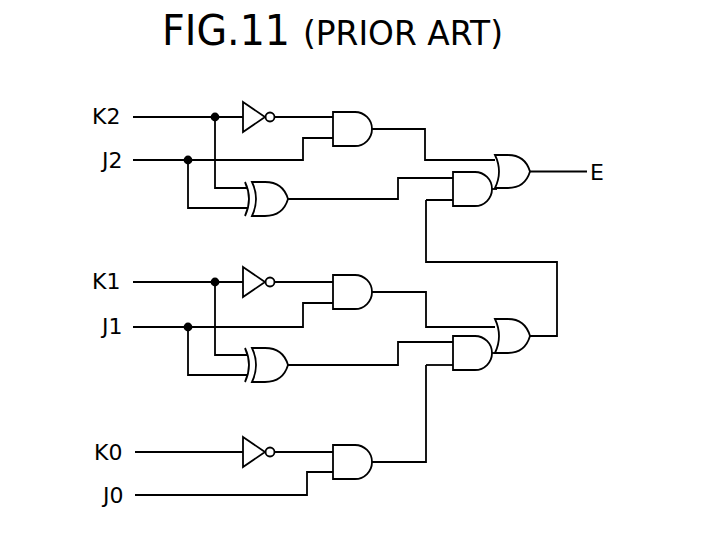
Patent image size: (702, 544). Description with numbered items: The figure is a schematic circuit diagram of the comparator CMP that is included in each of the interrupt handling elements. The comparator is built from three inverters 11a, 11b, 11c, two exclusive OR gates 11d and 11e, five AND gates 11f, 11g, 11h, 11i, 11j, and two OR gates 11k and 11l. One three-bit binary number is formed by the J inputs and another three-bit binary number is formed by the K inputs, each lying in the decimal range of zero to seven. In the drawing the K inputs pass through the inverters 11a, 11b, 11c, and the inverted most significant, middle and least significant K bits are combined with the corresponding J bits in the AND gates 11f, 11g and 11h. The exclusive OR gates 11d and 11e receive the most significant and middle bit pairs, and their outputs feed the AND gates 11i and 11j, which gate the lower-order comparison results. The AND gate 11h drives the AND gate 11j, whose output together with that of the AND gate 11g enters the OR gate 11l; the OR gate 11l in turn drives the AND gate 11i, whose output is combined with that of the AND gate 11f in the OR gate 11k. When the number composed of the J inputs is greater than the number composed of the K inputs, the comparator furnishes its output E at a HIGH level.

The inverter 11a is at (258, 102).
The inverter 11b is at (258, 267).
The inverter 11c is at (259, 439).
The exclusive OR gate 11d is at (295, 192).
The exclusive OR gate 11e is at (295, 357).
The AND gate 11f is at (348, 112).
The AND gate 11g is at (348, 275).
The AND gate 11h is at (348, 445).
The AND gate 11i is at (473, 207).
The AND gate 11j is at (473, 371).
The OR gate 11k is at (509, 155).
The OR gate 11l is at (509, 318).